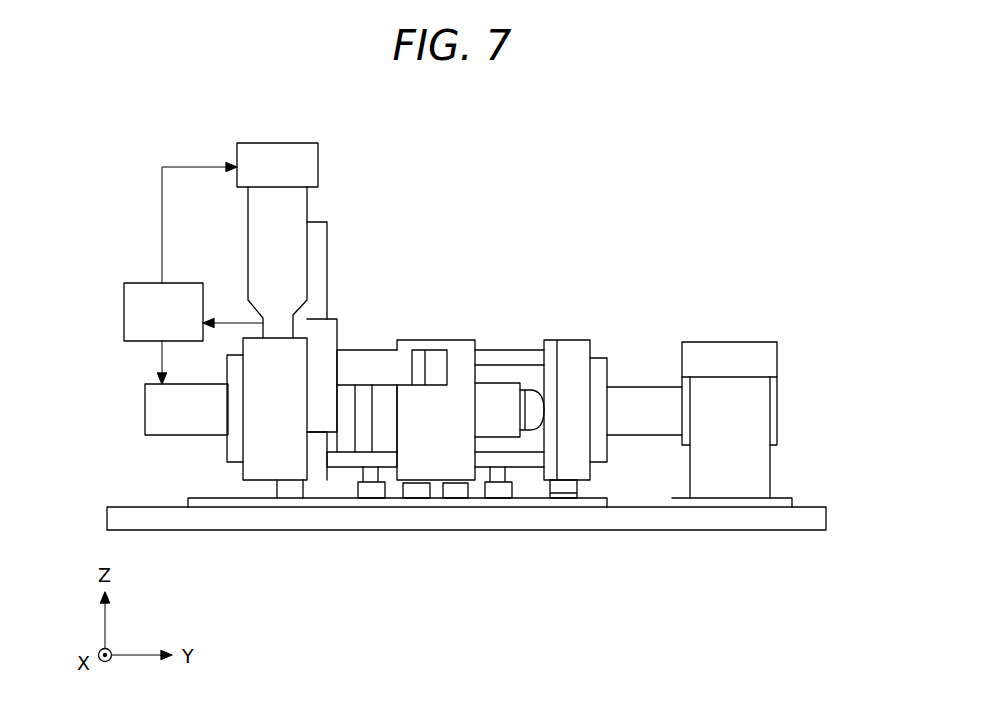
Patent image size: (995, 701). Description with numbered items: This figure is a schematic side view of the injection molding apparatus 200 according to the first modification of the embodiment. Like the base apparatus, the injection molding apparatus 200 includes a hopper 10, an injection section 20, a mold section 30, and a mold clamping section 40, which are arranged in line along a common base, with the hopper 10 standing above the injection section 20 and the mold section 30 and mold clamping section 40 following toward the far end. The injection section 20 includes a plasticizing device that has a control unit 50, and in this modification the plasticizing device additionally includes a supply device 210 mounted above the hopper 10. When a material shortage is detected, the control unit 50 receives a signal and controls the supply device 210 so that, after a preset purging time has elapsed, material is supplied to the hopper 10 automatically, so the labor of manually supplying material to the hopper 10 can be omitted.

The injection molding apparatus 200 is at (703, 288).
The supply device 210 is at (282, 164).
The hopper 10 is at (237, 225).
The control unit 50 is at (155, 310).
The injection section 20 is at (133, 397).
The mold section 30 is at (513, 332).
The mold clamping section 40 is at (752, 330).